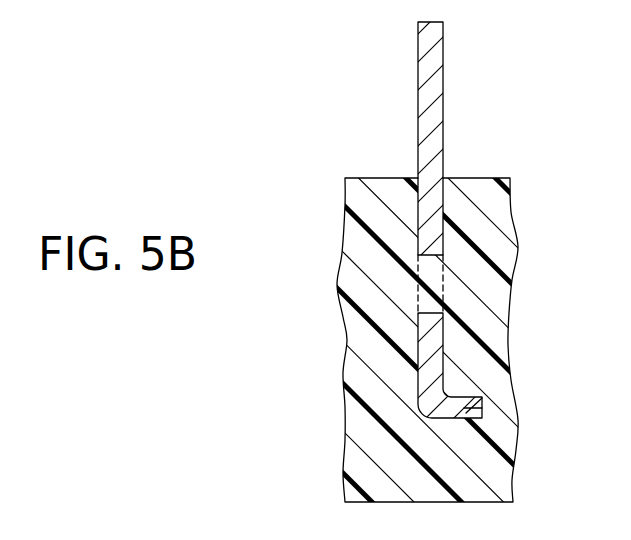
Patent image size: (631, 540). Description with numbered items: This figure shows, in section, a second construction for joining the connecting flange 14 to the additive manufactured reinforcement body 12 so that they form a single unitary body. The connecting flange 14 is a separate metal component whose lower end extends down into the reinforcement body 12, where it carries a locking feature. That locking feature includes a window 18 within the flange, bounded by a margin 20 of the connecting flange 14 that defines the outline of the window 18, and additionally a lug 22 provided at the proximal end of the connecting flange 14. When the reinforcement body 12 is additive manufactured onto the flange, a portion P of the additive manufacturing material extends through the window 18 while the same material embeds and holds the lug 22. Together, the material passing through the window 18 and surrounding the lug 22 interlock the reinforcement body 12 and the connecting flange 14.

The reinforcement body 12 is at (473, 230).
The connecting flange 14 is at (437, 91).
The windows 18 is at (443, 282).
The portion of additive manufacturing material P is at (425, 297).
The margin 20 is at (425, 325).
The lug 22 is at (468, 409).